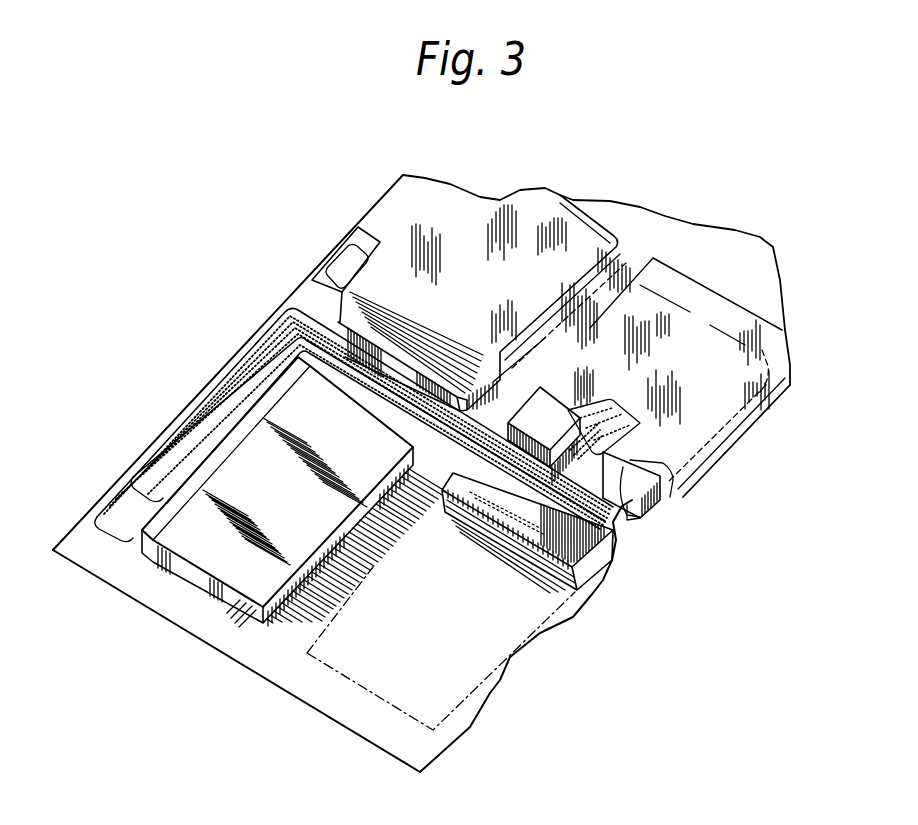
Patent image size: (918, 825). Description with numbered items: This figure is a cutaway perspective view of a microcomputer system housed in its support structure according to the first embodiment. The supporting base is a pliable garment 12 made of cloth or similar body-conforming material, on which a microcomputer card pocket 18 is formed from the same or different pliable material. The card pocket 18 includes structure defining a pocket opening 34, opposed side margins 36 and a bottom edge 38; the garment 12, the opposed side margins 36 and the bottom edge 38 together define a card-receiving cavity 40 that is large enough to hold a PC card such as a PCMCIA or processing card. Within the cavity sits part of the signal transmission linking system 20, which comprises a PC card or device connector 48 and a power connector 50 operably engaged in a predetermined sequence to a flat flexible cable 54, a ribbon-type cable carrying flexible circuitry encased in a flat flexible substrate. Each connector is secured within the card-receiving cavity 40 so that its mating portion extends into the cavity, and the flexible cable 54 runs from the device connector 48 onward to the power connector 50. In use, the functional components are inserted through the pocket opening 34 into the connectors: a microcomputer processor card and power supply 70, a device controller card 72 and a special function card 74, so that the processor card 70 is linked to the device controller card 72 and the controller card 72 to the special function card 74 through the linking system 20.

The pliable garment 12 is at (339, 702).
The microcomputer card pocket 18 is at (470, 212).
The signal transmission linking system 20 is at (270, 313).
The pocket opening 34 is at (668, 500).
The opposed side margins 36 is at (765, 405).
The bottom edge 38 is at (717, 287).
The card-receiving cavity 40 is at (702, 484).
The PC card or device connector 48 is at (123, 478).
The power connector 50 is at (620, 235).
The flat flexible cable 54 is at (193, 409).
The microcomputer processor card and power supply 70 is at (220, 563).
The device controller card 72 is at (323, 290).
The special function card 74 is at (627, 520).